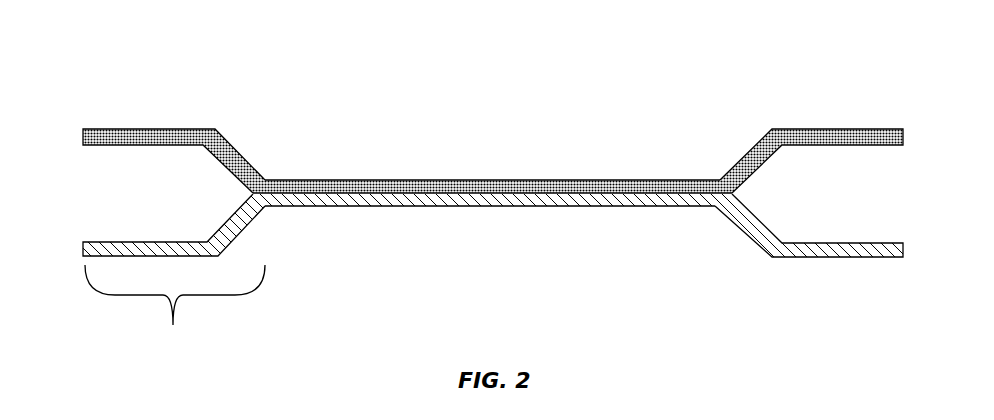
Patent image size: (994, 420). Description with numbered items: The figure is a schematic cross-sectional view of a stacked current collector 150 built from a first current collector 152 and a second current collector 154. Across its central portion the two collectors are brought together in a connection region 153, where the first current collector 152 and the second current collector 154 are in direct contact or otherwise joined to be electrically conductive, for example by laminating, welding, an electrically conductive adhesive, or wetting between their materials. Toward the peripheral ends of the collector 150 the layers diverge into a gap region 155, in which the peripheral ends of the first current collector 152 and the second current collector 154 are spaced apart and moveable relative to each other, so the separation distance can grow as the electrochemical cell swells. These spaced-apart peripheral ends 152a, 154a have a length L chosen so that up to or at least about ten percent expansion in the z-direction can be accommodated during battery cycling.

The stacked current collector 150 is at (294, 70).
The first current collector 152 is at (812, 130).
The peripheral end of the first current collector 152a is at (157, 128).
The connection region 153 is at (725, 228).
The second current collector 154 is at (838, 243).
The peripheral end of the second current collector 154a is at (177, 242).
The gap region 155 is at (77, 119).